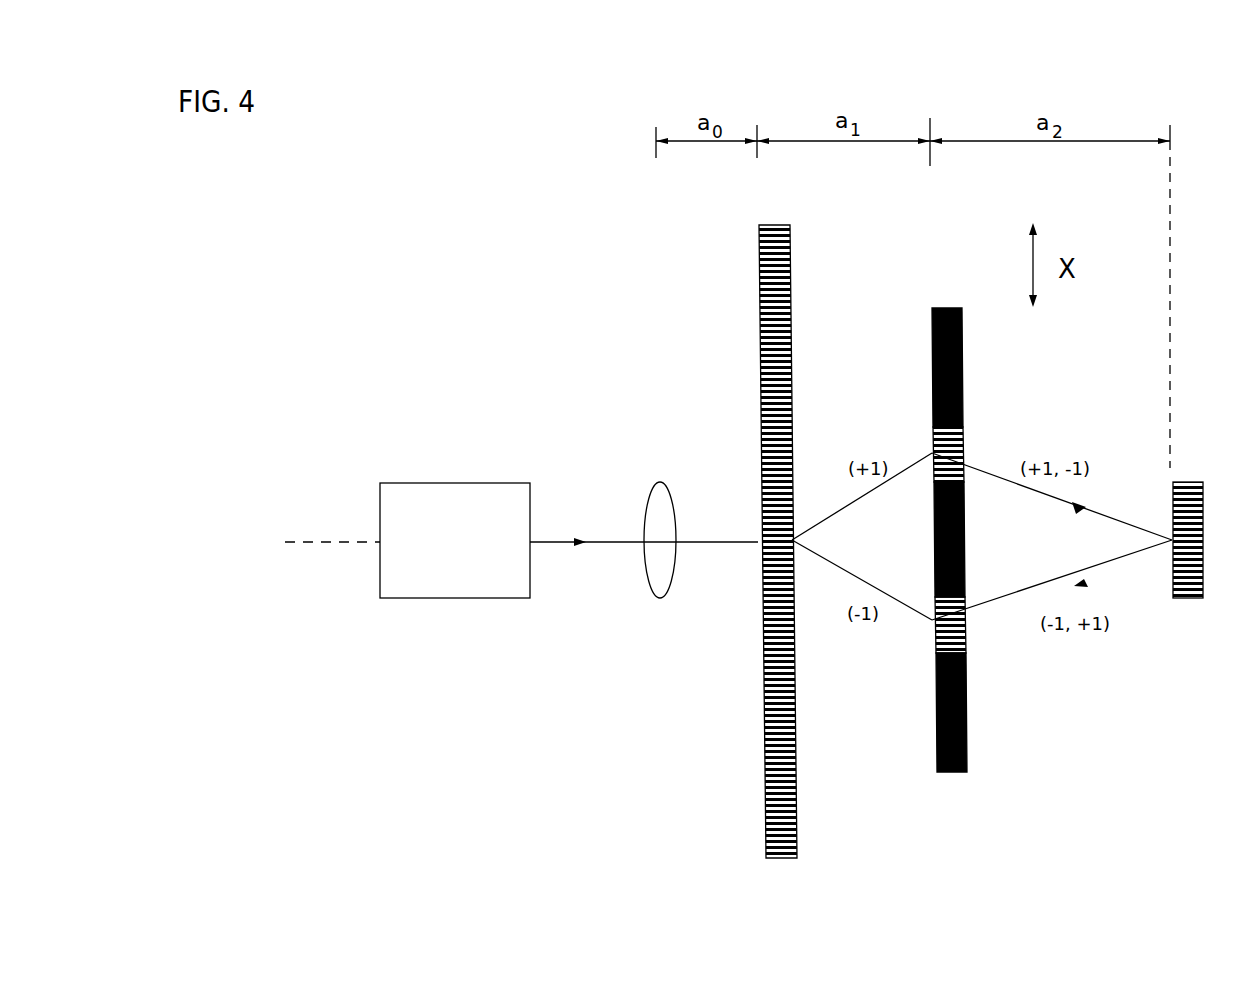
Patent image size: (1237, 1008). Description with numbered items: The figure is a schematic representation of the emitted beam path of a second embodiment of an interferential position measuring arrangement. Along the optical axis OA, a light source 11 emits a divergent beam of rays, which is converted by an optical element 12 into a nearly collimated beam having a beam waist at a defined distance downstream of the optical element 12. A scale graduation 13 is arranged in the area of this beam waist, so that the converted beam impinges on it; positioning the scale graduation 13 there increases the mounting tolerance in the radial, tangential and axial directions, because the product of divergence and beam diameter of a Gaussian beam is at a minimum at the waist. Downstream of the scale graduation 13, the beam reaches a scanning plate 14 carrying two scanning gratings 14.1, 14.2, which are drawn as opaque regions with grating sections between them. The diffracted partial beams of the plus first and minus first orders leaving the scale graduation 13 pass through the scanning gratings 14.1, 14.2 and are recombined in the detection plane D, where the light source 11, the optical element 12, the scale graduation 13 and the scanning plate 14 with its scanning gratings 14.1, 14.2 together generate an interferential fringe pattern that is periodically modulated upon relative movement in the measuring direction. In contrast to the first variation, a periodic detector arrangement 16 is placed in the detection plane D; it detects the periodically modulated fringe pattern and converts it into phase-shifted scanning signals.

The light source 11 is at (460, 583).
The optical element 12 is at (662, 562).
The scale graduation 13 is at (765, 795).
The scanning plate 14 is at (988, 597).
The scanning grating 14.1 is at (962, 362).
The scanning grating 14.2 is at (967, 697).
The periodic detector arrangement 16 is at (1188, 598).
The optical axis OA is at (330, 543).
The detection plane D is at (1172, 127).